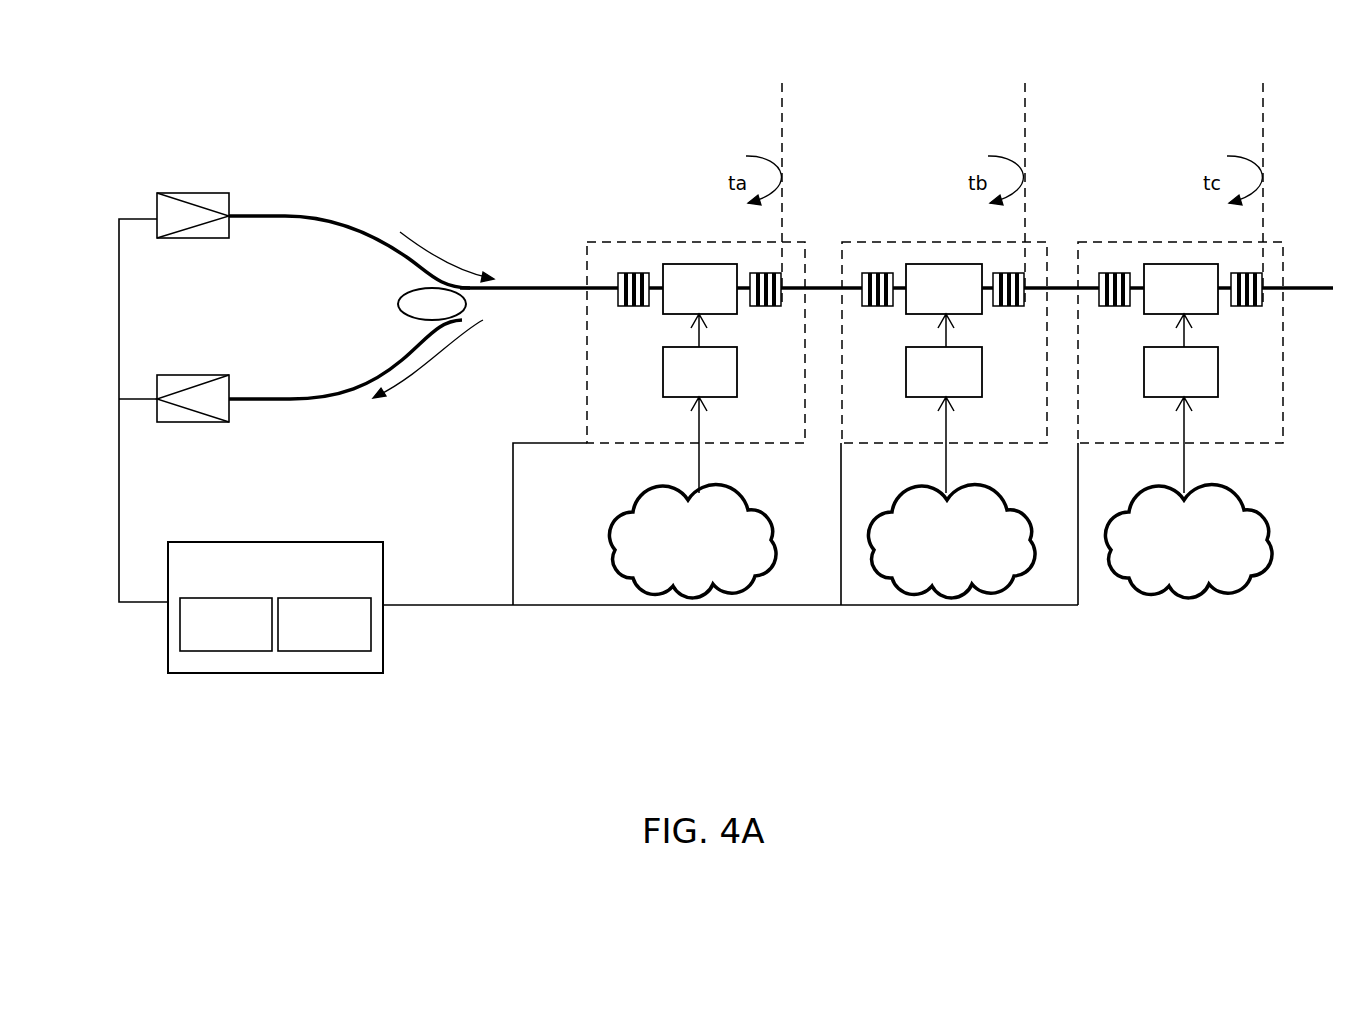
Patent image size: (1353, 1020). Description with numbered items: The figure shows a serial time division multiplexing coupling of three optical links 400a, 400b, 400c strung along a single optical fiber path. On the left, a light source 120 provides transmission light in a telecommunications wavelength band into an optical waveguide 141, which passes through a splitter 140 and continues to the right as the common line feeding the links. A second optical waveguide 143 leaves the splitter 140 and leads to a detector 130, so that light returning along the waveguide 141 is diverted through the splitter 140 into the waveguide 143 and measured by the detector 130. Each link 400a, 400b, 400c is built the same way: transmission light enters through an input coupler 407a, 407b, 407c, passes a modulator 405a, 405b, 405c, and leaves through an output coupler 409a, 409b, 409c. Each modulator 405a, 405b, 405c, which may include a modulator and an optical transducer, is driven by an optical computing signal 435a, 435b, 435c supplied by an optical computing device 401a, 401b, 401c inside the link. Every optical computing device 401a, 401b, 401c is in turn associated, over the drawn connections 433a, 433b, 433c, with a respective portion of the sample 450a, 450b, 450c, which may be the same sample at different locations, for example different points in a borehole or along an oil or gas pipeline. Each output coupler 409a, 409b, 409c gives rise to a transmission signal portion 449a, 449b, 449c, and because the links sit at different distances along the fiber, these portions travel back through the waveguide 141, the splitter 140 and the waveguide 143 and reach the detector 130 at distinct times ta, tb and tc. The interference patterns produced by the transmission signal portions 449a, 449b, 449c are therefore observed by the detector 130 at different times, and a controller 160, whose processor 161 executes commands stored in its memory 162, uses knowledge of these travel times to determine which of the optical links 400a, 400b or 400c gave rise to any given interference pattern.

The light source 120 is at (198, 193).
The detector 130 is at (176, 423).
The splitter 140 is at (415, 314).
The optical waveguide 141 is at (280, 218).
The optical waveguide 143 is at (356, 387).
The controller 160 is at (251, 586).
The processor 161 is at (226, 624).
The memory 162 is at (324, 624).
The optical link 400a is at (800, 438).
The optical link 400b is at (1042, 437).
The optical link 400c is at (1280, 437).
The optical computing device 401a is at (675, 382).
The optical computing device 401b is at (919, 382).
The optical computing device 401c is at (1156, 382).
The modulator 405a is at (675, 299).
The modulator 405b is at (919, 299).
The modulator 405c is at (1156, 299).
The input coupler 407a is at (647, 274).
The input coupler 407b is at (891, 274).
The input coupler 407c is at (1128, 274).
The output coupler 409a is at (766, 307).
The output coupler 409b is at (1009, 307).
The output coupler 409c is at (1247, 307).
The communication link 433a is at (700, 474).
The communication link 433b is at (947, 474).
The communication link 433c is at (1185, 474).
The optical computing signal 435a is at (697, 334).
The optical computing signal 435b is at (944, 334).
The optical computing signal 435c is at (1182, 334).
The transmission signal portion 449a is at (737, 194).
The transmission signal portion 449b is at (985, 194).
The transmission signal portion 449c is at (1220, 194).
The sample 450a is at (668, 553).
The sample 450b is at (925, 553).
The sample 450c is at (1162, 553).